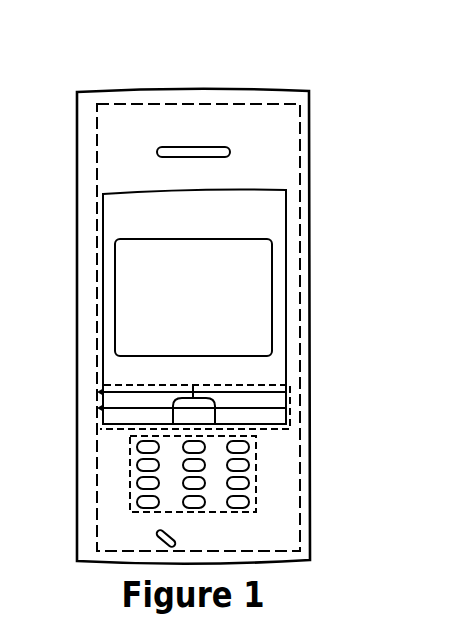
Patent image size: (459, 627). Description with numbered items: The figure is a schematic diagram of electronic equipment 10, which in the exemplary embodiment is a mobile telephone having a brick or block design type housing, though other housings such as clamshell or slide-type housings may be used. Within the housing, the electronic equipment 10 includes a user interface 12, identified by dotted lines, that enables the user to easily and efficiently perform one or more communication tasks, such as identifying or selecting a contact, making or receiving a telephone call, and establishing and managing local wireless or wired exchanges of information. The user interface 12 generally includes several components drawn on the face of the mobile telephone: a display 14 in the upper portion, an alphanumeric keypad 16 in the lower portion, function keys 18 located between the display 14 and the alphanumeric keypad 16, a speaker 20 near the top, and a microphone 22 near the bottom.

The electronic equipment 10 is at (246, 84).
The user interface 12 is at (303, 202).
The display 14 is at (194, 307).
The alphanumeric keypad 16 is at (259, 484).
The function keys 18 is at (293, 405).
The speaker 20 is at (209, 143).
The microphone 22 is at (178, 544).